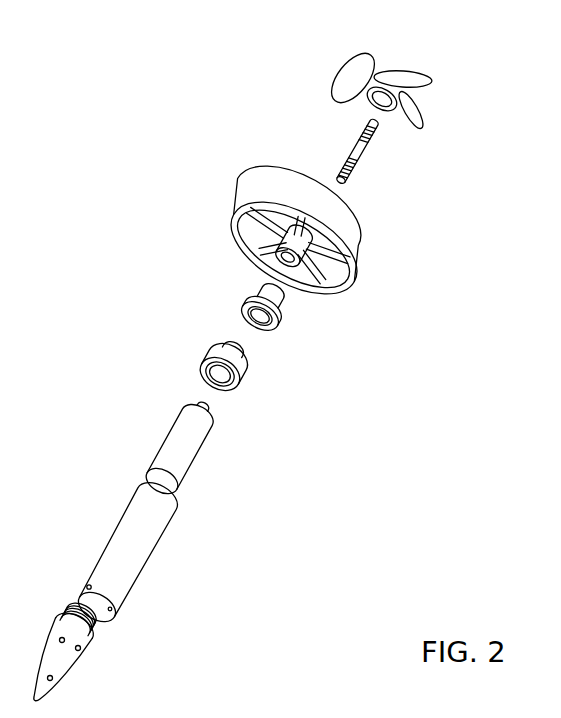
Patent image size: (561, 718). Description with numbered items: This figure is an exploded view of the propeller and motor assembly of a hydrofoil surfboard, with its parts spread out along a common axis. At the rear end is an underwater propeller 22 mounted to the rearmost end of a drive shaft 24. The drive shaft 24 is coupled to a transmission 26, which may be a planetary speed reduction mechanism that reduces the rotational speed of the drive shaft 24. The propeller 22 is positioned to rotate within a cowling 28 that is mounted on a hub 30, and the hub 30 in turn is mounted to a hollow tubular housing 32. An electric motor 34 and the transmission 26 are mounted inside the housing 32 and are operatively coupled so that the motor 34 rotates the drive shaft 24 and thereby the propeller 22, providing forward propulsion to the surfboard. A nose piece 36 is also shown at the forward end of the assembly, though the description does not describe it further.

The underwater propeller 22 is at (377, 72).
The drive shaft 24 is at (359, 150).
The transmission 26 is at (247, 366).
The cowling 28 is at (363, 262).
The hub 30 is at (260, 296).
The hollow tubular housing 32 is at (141, 563).
The electric motor 34 is at (195, 463).
The nose tip 36 is at (72, 670).